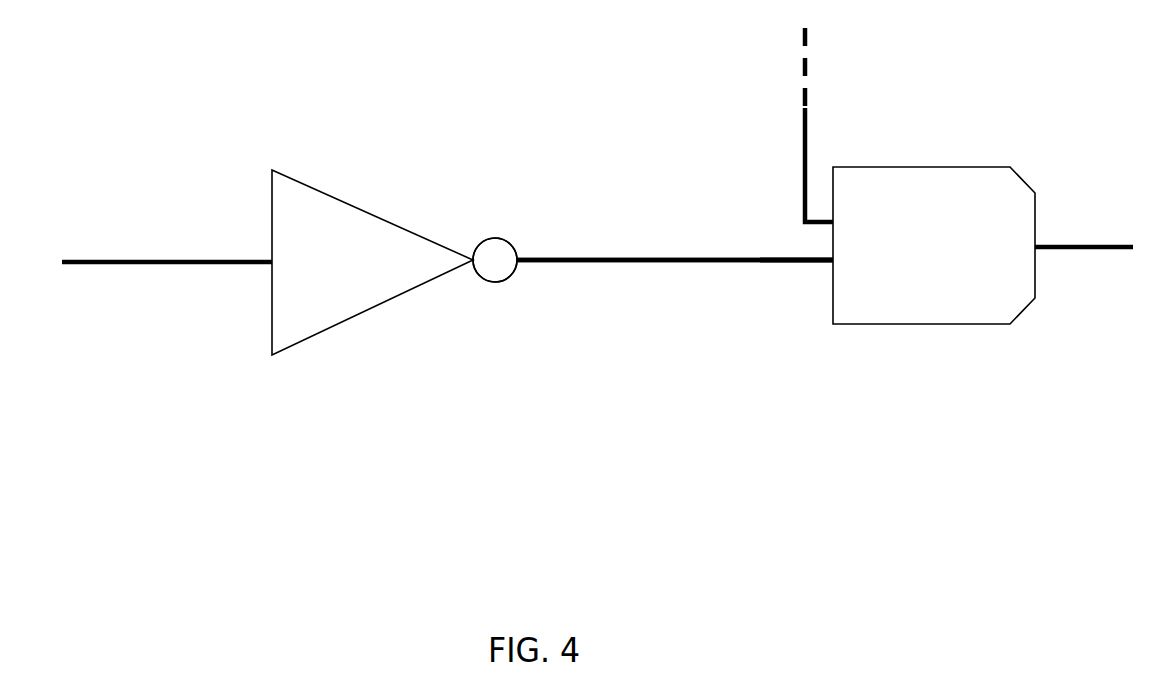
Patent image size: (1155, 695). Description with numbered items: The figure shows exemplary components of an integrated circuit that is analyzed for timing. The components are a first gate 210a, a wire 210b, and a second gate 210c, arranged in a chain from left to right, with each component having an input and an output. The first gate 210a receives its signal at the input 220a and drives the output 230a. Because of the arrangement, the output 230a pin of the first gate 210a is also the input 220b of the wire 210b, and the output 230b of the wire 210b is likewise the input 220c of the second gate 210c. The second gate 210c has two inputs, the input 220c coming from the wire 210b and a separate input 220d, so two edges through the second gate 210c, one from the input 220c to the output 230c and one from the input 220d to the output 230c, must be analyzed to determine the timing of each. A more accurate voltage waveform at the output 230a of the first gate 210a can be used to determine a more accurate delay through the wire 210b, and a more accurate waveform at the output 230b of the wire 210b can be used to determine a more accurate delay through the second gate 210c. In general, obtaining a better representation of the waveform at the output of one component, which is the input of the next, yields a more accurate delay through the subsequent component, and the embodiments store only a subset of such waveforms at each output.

The first gate 210a is at (372, 272).
The wire 210b is at (680, 262).
The second gate 210c is at (965, 258).
The input 220a is at (254, 283).
The input of the wire 220b is at (525, 277).
The input of the second gate 220c is at (785, 338).
The second input of the second gate 220d is at (823, 204).
The output of the first gate 230a is at (528, 308).
The output of the wire 230b is at (817, 283).
The output of the second gate 230c is at (1049, 258).